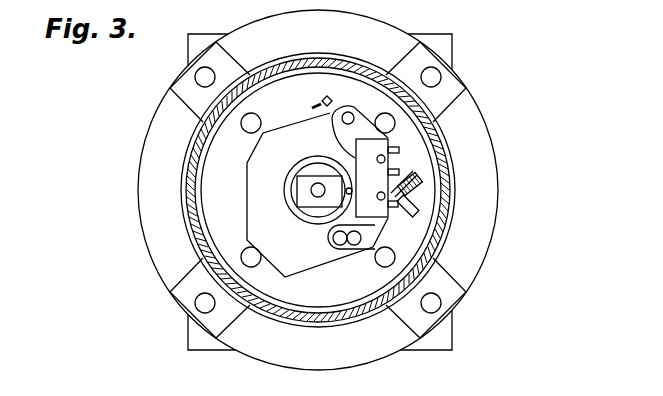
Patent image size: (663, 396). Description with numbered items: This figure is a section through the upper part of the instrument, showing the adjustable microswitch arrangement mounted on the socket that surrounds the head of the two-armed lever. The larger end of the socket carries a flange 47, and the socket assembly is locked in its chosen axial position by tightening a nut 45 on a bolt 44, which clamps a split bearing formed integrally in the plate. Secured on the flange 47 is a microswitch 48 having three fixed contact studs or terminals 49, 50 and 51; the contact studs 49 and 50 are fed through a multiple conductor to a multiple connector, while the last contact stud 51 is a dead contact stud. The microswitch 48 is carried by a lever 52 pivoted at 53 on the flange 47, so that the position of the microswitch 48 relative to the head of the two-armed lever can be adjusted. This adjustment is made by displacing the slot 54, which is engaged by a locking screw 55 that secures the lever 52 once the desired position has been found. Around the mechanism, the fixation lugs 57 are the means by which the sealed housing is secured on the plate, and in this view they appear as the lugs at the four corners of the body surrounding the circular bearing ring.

The bolt 44 is at (317, 104).
The nut 45 is at (420, 188).
The flange 47 is at (266, 178).
The microswitch 48 is at (356, 153).
The contact stud 49 is at (418, 208).
The contact stud 50 is at (399, 151).
The contact stud 51 is at (400, 172).
The lever 52 is at (338, 246).
The pivot 53 is at (351, 113).
The slot 54 is at (371, 238).
The locking screw 55 is at (352, 246).
The fixation lugs 57 is at (430, 64).